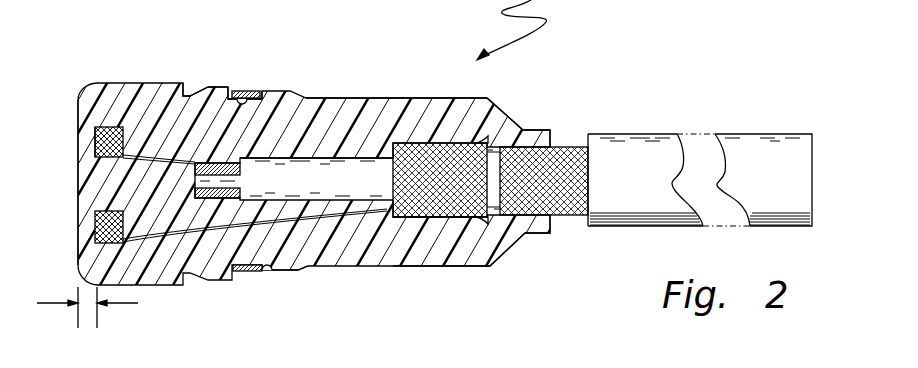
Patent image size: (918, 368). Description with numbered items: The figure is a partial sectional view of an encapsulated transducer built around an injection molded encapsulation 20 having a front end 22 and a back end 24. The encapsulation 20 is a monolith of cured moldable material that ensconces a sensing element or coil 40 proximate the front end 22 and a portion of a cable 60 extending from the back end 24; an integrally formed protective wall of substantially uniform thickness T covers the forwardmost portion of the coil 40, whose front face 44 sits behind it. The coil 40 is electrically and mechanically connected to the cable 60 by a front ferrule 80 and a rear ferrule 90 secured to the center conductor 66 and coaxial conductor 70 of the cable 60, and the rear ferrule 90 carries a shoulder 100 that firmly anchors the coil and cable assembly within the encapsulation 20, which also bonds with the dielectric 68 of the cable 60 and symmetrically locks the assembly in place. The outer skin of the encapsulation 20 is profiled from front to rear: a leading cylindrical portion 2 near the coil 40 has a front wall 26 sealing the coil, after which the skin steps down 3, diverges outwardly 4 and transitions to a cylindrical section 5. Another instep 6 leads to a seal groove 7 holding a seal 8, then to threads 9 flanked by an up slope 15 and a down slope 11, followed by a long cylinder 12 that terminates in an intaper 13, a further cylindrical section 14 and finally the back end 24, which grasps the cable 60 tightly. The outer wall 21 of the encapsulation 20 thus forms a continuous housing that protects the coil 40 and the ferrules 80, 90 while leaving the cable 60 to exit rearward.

The cylindrical leading portion 2 is at (151, 287).
The step down 3 is at (183, 84).
The outward divergence 4 is at (200, 86).
The cylindrical section 5 is at (217, 86).
The instep 6 is at (233, 92).
The seal groove 7 is at (257, 92).
The seal 8 is at (243, 271).
The threads 9 is at (300, 271).
The down slope 11 is at (304, 270).
The long cylinder 12 is at (401, 258).
The intaper 13 is at (505, 258).
The cylindrical section 14 is at (542, 235).
The up slope 15 is at (268, 273).
The encapsulation 20 is at (356, 156).
The outer wall 21 is at (338, 108).
The front end 22 is at (78, 110).
The back end 24 is at (556, 146).
The front wall 26 is at (84, 229).
The sensing element 40 is at (110, 127).
The front face 44 is at (95, 142).
The cable 60 is at (730, 115).
The center conductor 66 is at (193, 184).
The dielectric 68 is at (323, 192).
The coaxial conductor 70 is at (447, 218).
The front ferrule 80 is at (213, 165).
The rear ferrule 90 is at (433, 138).
The shoulder 100 is at (490, 148).
The thickness T is at (86, 327).